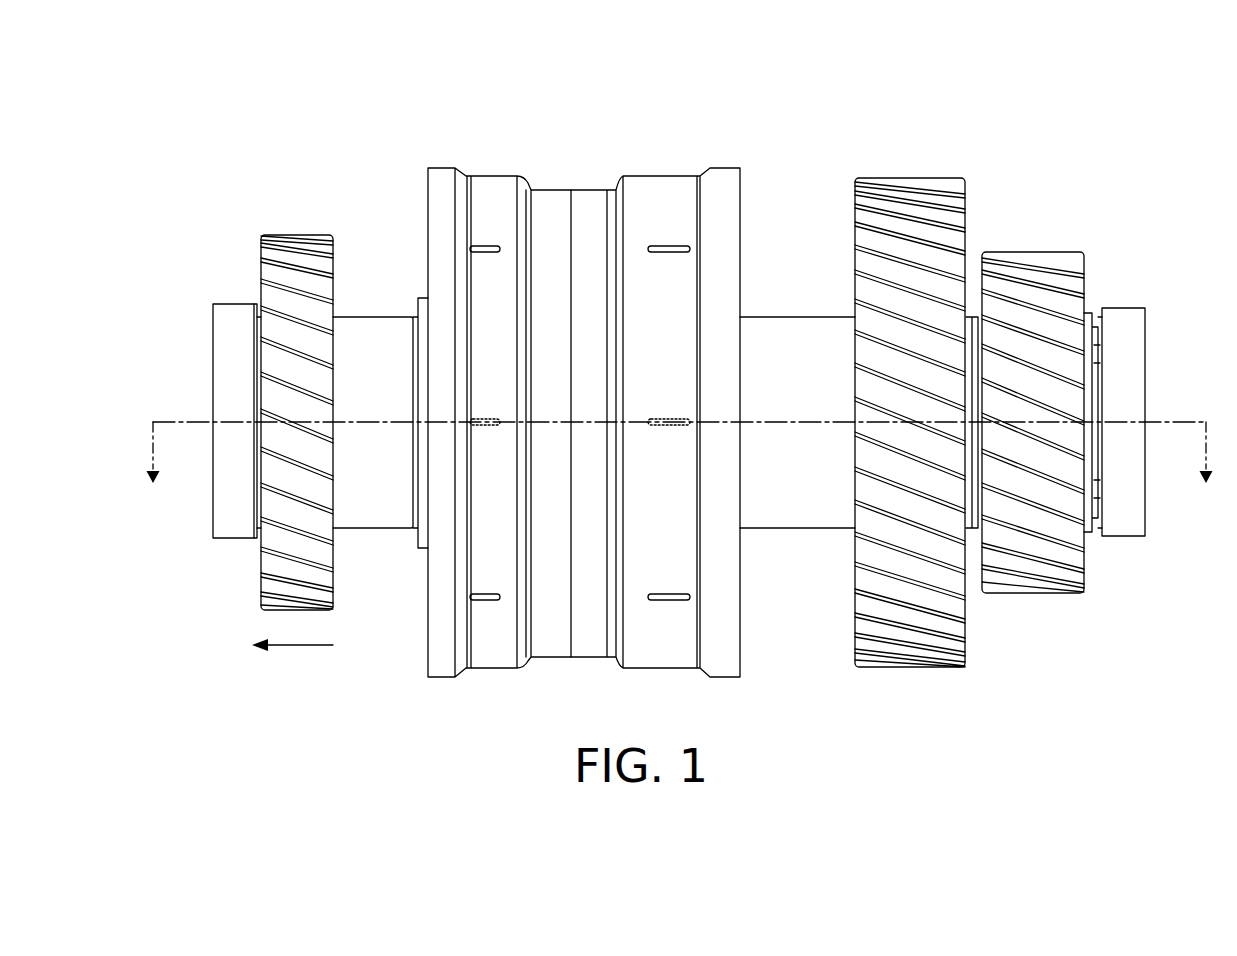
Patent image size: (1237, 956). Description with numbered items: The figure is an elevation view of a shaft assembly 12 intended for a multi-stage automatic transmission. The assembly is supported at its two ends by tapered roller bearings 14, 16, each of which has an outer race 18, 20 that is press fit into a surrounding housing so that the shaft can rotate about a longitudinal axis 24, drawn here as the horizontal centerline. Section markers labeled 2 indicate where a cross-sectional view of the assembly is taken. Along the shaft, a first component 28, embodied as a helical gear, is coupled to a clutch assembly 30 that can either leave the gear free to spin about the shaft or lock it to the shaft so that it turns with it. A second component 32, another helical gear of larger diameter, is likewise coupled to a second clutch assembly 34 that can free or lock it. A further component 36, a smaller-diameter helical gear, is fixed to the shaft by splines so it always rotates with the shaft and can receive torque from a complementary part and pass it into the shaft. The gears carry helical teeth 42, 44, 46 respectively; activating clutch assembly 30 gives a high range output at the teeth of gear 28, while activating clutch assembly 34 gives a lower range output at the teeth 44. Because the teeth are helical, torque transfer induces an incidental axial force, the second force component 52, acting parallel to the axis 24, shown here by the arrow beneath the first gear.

The shaft assembly 12 is at (1142, 100).
The tapered roller bearing 14 is at (192, 354).
The tapered roller bearing 16 is at (1162, 314).
The outer race 18 is at (225, 510).
The outer race 20 is at (1135, 501).
The longitudinal axis 24 is at (1182, 420).
The first component 28 is at (346, 222).
The clutch assembly 30 is at (475, 157).
The second component 32 is at (990, 179).
The second clutch assembly 34 is at (760, 171).
The component 36 is at (1101, 259).
The helical teeth 42 is at (283, 328).
The helical teeth 44 is at (950, 277).
The teeth 46 is at (1073, 532).
The second force component 52 is at (288, 648).
The section line 2- 2 is at (674, 455).